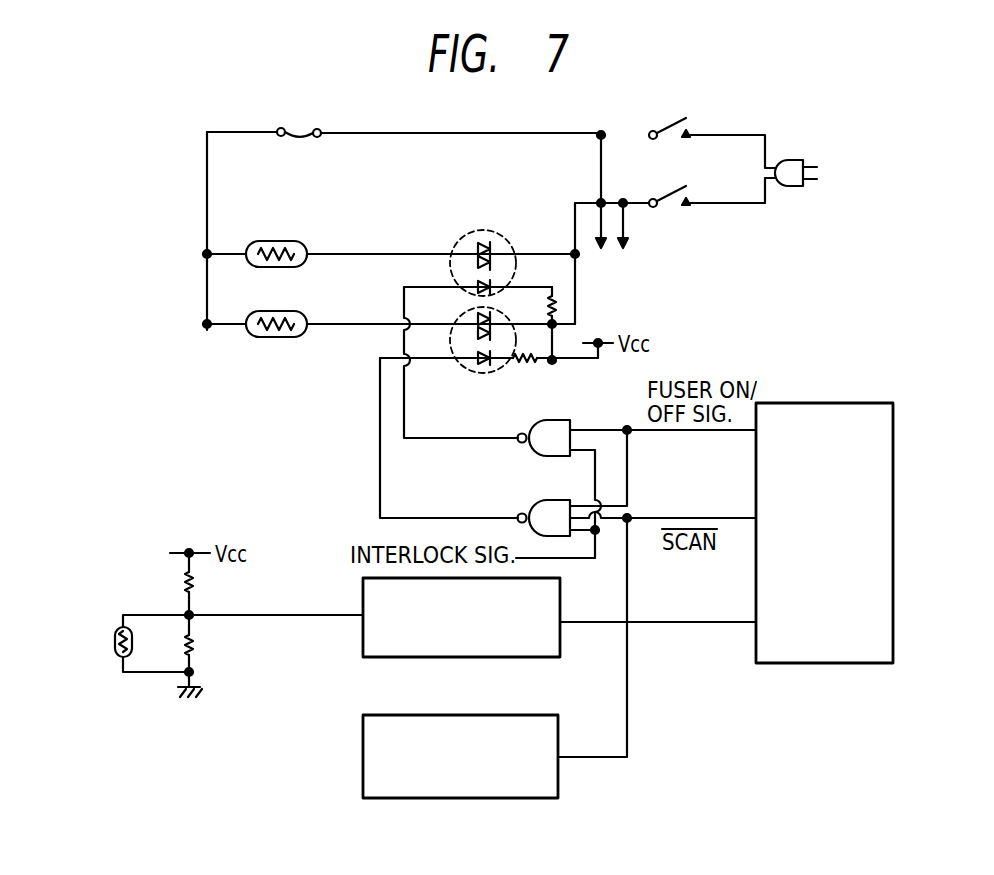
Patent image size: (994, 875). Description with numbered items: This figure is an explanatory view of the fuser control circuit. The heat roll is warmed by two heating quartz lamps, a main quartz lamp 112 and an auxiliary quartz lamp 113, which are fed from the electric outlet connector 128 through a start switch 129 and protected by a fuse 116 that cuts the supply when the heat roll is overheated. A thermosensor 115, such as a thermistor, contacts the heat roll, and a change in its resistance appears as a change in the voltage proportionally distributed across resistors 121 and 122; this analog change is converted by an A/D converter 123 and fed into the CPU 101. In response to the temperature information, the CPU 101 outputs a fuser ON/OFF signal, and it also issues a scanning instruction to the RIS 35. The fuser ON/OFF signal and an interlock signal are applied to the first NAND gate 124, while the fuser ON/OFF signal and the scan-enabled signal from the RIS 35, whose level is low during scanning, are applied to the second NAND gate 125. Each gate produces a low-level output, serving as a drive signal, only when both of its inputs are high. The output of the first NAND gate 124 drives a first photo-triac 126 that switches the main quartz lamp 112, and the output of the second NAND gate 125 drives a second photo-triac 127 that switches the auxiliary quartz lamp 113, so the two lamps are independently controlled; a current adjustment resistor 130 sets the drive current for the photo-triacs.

The fuse 116 is at (296, 128).
The main quartz lamp 112 is at (292, 268).
The auxiliary quartz lamp 113 is at (290, 338).
The first photo-triac 126 is at (487, 232).
The second photo-triac 127 is at (465, 318).
The current adjustment resistor 130 is at (565, 300).
The start switch 129 is at (678, 188).
The electric outlet connector 128 is at (795, 189).
The first NAND gate 124 is at (565, 420).
The second NAND gate 125 is at (548, 500).
The CPU 101 is at (867, 403).
The A/D converter 123 is at (562, 585).
The RIS 35 is at (563, 724).
The resistor 121 is at (196, 582).
The resistor 122 is at (196, 646).
The thermosensor 115 is at (115, 640).